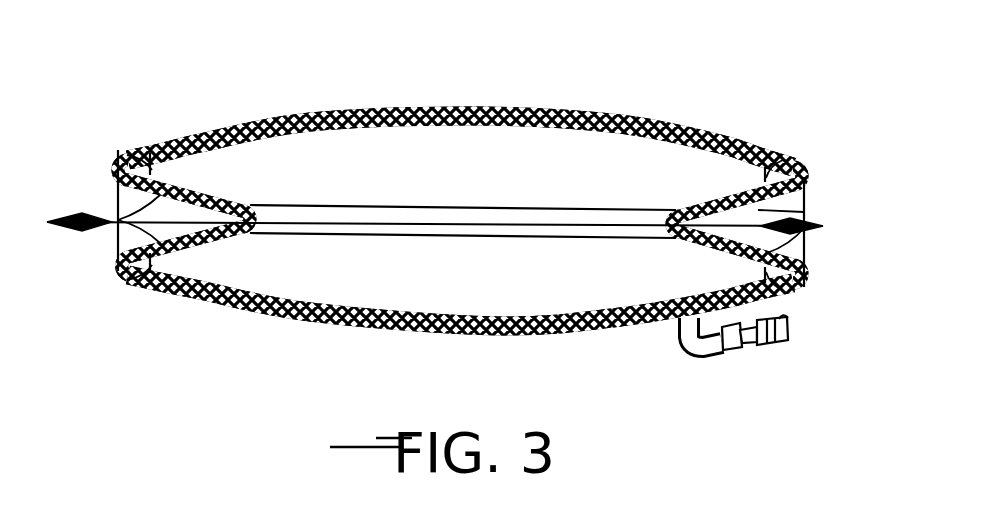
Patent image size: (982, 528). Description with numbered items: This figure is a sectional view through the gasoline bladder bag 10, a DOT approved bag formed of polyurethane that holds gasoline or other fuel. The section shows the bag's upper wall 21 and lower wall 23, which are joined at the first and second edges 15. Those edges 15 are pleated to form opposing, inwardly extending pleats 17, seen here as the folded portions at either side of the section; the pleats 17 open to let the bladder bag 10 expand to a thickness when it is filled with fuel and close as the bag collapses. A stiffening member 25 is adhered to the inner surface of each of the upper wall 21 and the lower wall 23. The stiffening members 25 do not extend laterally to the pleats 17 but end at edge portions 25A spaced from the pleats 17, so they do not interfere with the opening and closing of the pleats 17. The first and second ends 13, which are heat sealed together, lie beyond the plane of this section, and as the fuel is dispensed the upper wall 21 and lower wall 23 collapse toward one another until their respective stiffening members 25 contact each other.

The gasoline bladder bag 10 is at (460, 208).
The first and second ends 13 is at (386, 210).
The first and second edges 15 is at (808, 177).
The pleats 17 is at (439, 224).
The upper wall 21 is at (486, 104).
The lower wall 23 is at (517, 340).
The stiffening member 25 is at (578, 109).
The edge portions 25A is at (130, 162).